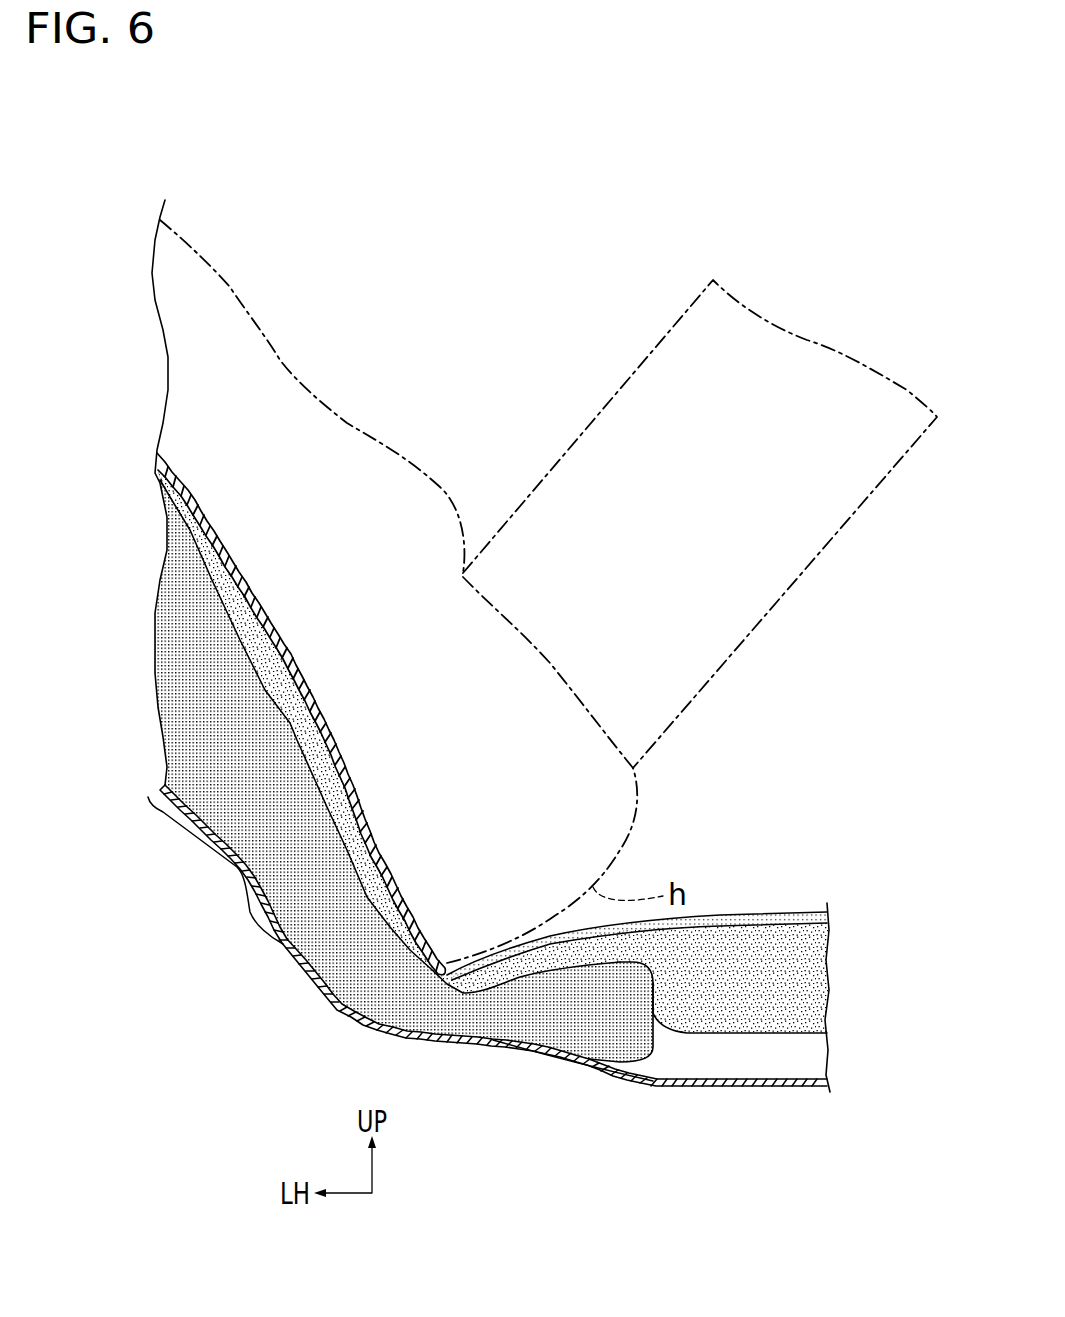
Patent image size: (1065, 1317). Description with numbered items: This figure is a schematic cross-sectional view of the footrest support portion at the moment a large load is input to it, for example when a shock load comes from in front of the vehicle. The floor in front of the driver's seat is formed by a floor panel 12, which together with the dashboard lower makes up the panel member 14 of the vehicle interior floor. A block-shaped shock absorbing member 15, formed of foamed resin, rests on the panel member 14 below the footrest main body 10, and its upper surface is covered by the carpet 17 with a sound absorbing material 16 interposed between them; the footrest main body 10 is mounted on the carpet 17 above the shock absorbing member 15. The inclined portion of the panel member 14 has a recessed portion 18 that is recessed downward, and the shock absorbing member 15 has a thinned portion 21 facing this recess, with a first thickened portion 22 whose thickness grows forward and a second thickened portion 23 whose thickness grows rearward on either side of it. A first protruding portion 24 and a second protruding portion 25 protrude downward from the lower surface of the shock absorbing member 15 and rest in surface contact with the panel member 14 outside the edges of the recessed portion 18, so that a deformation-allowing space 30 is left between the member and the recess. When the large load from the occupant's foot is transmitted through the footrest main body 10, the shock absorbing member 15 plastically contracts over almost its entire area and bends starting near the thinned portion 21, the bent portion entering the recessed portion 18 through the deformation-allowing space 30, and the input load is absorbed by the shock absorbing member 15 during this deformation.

The footrest main body 10 is at (387, 867).
The floor panel 12 is at (682, 1087).
The panel member 14 is at (495, 996).
The shock absorbing member 15 is at (247, 653).
The sound absorbing material 16 is at (763, 947).
The carpet 17 is at (723, 917).
The recessed portion 18 is at (313, 973).
The thinned portion 21 is at (443, 1013).
The first thickened portion 22 is at (162, 658).
The second thickened portion 23 is at (605, 1040).
The first protruding portion 24 is at (240, 857).
The second protruding portion 25 is at (573, 1053).
The deformation-allowing space 30 is at (350, 995).